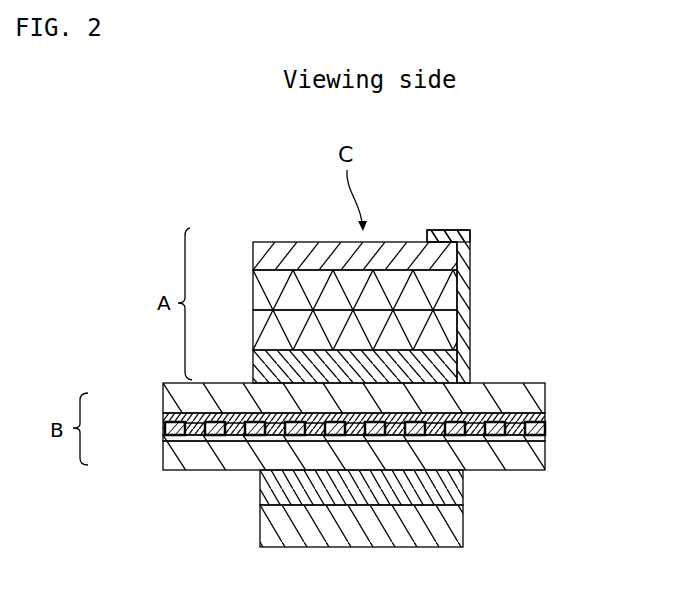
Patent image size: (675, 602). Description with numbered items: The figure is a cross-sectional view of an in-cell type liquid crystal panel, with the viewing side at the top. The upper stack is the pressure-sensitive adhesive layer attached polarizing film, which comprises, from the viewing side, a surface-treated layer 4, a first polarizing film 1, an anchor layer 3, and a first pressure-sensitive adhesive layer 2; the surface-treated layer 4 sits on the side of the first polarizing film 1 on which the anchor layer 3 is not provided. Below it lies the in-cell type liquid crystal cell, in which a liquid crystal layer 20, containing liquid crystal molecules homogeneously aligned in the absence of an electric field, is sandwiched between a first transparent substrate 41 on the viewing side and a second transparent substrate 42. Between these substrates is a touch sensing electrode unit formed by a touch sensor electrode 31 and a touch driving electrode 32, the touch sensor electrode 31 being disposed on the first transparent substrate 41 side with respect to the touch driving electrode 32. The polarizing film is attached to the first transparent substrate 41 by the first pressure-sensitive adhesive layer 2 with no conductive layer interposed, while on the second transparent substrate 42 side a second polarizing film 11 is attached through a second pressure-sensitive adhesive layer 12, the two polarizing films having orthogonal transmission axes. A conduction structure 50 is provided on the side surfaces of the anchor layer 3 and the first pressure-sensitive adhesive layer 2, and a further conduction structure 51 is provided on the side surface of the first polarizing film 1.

The first polarizing film 1 is at (265, 291).
The first pressure-sensitive adhesive layer 2 is at (258, 374).
The anchor layer 3 is at (262, 337).
The surface-treated layer 4 is at (258, 256).
The second polarizing film 11 is at (265, 522).
The second pressure-sensitive adhesive layer 12 is at (265, 487).
The liquid crystal layer 20 is at (540, 433).
The touch sensor electrode 31 is at (163, 416).
The touch driving electrode 32 is at (163, 432).
The first transparent substrate 41 is at (538, 403).
The second transparent substrate 42 is at (540, 455).
The conduction structure 50 is at (472, 338).
The conduction structure 51 is at (472, 236).